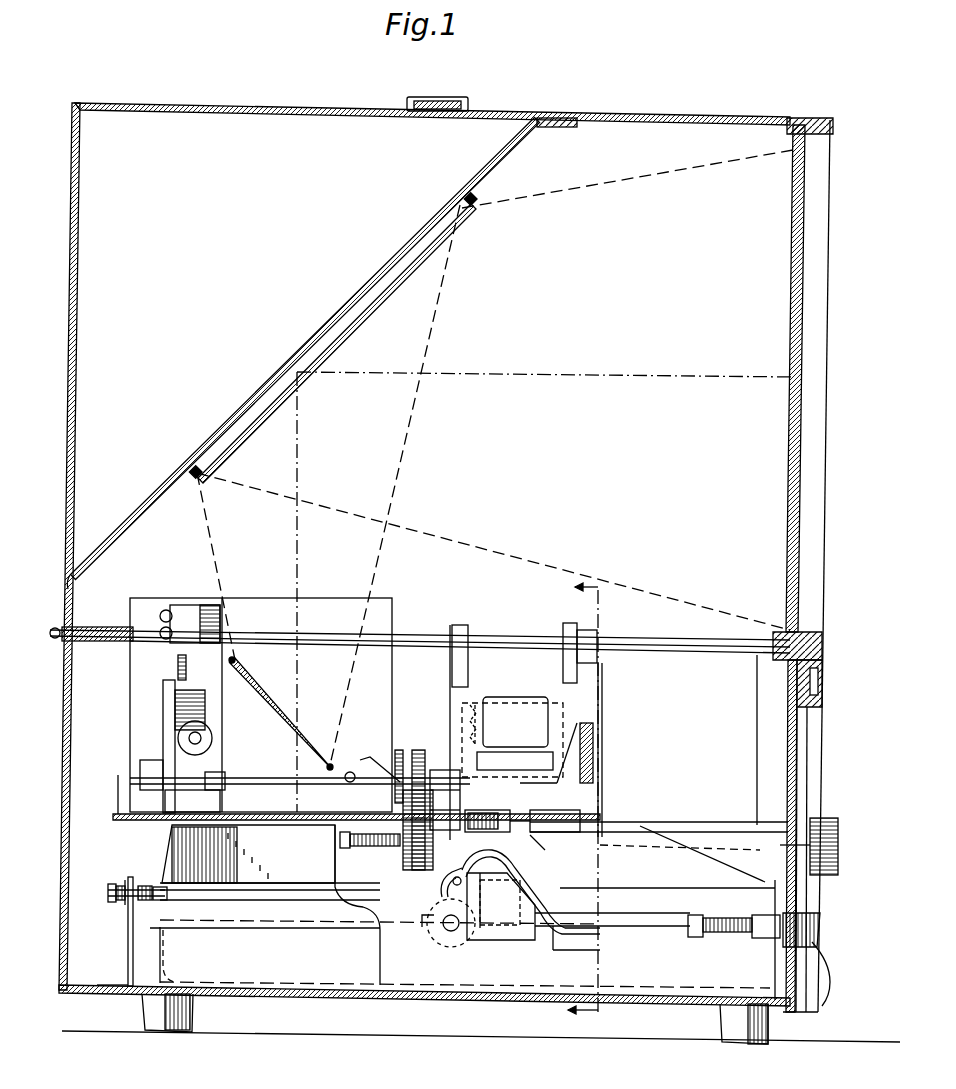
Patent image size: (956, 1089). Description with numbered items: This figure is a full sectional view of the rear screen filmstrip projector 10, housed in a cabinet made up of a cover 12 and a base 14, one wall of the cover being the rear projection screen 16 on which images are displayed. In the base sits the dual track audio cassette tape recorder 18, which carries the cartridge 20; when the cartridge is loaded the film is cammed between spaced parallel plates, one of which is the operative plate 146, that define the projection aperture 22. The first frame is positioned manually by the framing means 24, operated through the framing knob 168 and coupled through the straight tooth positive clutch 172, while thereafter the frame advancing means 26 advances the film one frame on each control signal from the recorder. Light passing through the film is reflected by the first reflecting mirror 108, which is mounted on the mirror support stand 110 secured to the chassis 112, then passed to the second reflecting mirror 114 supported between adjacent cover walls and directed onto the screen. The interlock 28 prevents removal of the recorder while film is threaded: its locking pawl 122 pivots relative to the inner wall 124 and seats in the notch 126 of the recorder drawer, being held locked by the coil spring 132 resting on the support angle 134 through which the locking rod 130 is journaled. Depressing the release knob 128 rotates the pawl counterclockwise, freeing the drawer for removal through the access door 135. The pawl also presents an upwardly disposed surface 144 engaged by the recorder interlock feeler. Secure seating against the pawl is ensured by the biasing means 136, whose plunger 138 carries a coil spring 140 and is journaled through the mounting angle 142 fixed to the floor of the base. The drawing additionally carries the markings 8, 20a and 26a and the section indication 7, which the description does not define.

The rear screen filmstrip projector 10 is at (628, 109).
The cover 12 is at (208, 106).
The base 14 is at (130, 995).
The rear projection screen 16 is at (808, 316).
The second reflecting mirror 114 is at (348, 320).
The operative plate 146 is at (543, 660).
The frame advancing means 26 is at (146, 688).
The first reflecting mirror 108 is at (287, 721).
The mirror support stand 110 is at (322, 800).
The pivot 8 is at (348, 768).
The lamp housing portion 20a is at (346, 778).
The chassis 112 is at (118, 801).
The projection aperture 22 is at (518, 704).
The cartridge 20 is at (568, 720).
The access door 135 is at (785, 762).
The framing means 24 is at (750, 824).
The framing knob 168 is at (809, 846).
The dual track audio cassette tape recorder 18 is at (178, 856).
The coil spring 140 is at (150, 874).
The plunger 138 is at (108, 884).
The biasing means 136 is at (120, 900).
The mounting angle 142 is at (126, 947).
The straight tooth positive clutch 172 is at (408, 869).
The drive portion 26a is at (498, 804).
The upwardly disposed surface 144 is at (514, 865).
The locking pawl 122 is at (440, 883).
The inner wall 124 is at (411, 931).
The interlock 28 is at (444, 944).
The notch 126 is at (528, 924).
The locking rod 130 is at (558, 930).
The support angle 134 is at (700, 938).
The coil spring 132 is at (726, 940).
The release knob 128 is at (810, 990).
The section line 7- 7 is at (569, 800).